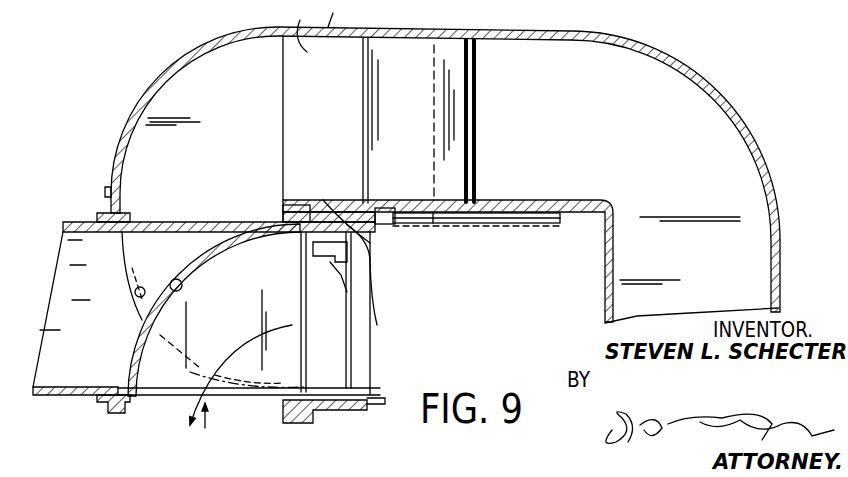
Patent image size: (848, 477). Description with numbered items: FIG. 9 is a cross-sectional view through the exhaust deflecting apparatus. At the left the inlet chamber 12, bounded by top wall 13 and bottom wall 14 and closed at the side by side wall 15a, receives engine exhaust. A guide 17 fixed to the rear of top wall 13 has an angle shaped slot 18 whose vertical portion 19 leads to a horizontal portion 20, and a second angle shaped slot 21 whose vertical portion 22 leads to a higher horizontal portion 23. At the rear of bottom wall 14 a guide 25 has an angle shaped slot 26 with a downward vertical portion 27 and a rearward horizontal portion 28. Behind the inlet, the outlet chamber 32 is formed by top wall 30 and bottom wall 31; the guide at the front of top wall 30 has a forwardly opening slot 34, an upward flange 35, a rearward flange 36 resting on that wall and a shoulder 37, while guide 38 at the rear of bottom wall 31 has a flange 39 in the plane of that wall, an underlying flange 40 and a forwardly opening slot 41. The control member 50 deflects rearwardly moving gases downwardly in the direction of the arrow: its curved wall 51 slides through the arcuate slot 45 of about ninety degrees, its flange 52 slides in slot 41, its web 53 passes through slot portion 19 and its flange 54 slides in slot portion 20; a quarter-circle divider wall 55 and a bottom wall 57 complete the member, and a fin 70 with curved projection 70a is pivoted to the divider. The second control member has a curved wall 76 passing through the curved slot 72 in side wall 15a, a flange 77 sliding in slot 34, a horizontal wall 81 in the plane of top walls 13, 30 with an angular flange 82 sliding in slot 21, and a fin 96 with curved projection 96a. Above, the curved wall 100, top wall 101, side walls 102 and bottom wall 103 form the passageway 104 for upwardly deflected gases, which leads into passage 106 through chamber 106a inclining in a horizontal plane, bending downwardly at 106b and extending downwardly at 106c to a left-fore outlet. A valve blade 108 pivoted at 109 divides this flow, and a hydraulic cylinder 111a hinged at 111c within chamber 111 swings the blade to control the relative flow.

The curved wall 100 is at (195, 50).
The top horizontal wall 101 is at (342, 13).
The side walls 102 is at (253, 93).
The bottom wall 103 is at (364, 200).
The passageway 104 is at (302, 26).
The passage 106 is at (567, 122).
The chamber 106a is at (578, 33).
The downward bend 106b is at (722, 85).
The downwardly extending portion 106c is at (797, 267).
The valve blade 108 is at (383, 68).
The pivot 109 is at (477, 80).
The chamber 111 is at (557, 227).
The hydraulic cylinder 111a is at (496, 226).
The hinge 111c is at (427, 226).
The inlet chamber 12 is at (393, 337).
The top wall 13 is at (357, 227).
The bottom wall 14 is at (365, 401).
The side wall 15a is at (65, 245).
The guide 17 is at (343, 217).
The angle shaped slot 18 is at (350, 275).
The vertical slot portion 19 is at (367, 260).
The horizontal slot portion 20 is at (317, 213).
The second angle shaped slot 21 is at (300, 213).
The vertical slot portion 22 is at (312, 238).
The horizontal slot portion 23 is at (290, 205).
The guide 25 is at (285, 430).
The angle shaped slot 26 is at (313, 418).
The vertical slot portion 27 is at (299, 422).
The horizontal slot portion 28 is at (287, 407).
The top wall 30 is at (80, 222).
The bottom wall 31 is at (67, 398).
The outlet chamber 32 is at (50, 400).
The slot 34 is at (119, 202).
The flange 35 is at (99, 178).
The flange 36 is at (100, 217).
The shoulder 37 is at (114, 235).
The guide 38 is at (134, 414).
The flange 39 is at (123, 392).
The flange 40 is at (106, 412).
The slot 41 is at (138, 408).
The arcuate slot 45 is at (143, 276).
The control member 50 is at (241, 391).
The curved wall 51 is at (204, 262).
The flange 52 is at (120, 413).
The web 53 is at (332, 213).
The flange 54 is at (303, 210).
The divider wall 55 is at (223, 337).
The bottom wall 57 is at (163, 368).
The fin 70 is at (345, 354).
The curved projection 70a is at (380, 374).
The curved slot 72 is at (135, 295).
The curved wall 76 is at (140, 305).
The flange 77 is at (130, 213).
The horizontal wall 81 is at (228, 222).
The angular flange 82 is at (300, 215).
The fin 96 is at (343, 308).
The curved projection 96a is at (332, 272).